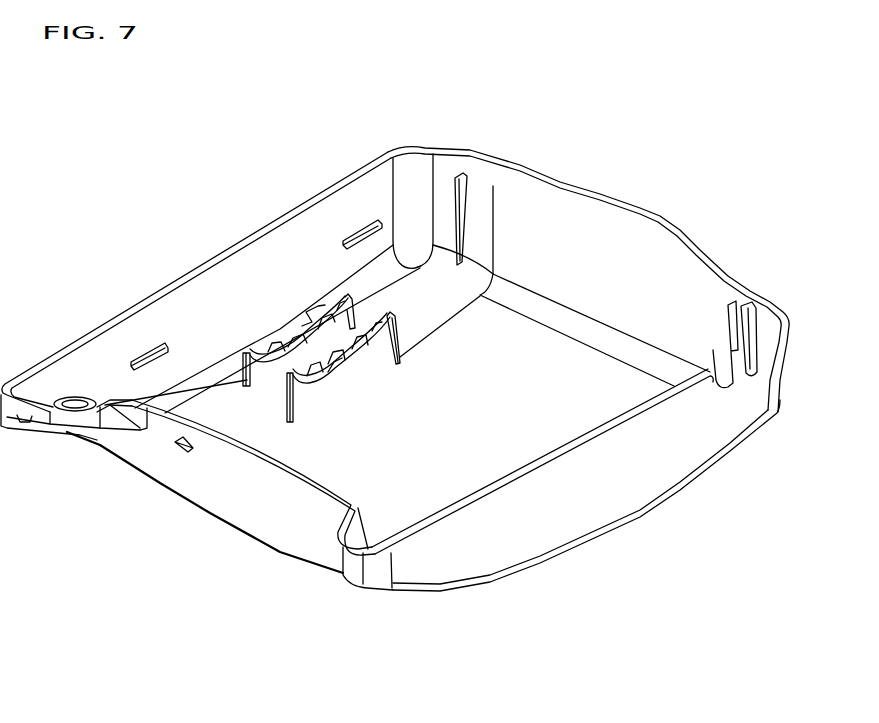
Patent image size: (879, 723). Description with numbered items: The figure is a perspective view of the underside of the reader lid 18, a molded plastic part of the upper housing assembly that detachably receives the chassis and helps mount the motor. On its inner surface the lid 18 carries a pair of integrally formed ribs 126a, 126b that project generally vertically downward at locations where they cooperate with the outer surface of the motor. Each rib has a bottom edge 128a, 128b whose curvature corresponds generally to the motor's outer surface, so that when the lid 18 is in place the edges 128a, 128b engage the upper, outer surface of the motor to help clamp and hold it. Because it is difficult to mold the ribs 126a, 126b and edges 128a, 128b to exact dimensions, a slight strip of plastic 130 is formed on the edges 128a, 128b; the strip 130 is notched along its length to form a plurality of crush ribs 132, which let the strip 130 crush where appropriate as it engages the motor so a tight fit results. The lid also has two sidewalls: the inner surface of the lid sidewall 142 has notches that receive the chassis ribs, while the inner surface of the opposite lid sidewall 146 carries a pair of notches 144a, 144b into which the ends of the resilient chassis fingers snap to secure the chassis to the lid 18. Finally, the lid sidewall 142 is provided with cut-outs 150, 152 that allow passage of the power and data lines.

The lid 18 is at (490, 560).
The rib 126a is at (358, 367).
The rib 126b is at (345, 318).
The bottom edge 128a is at (328, 377).
The bottom edge 128b is at (273, 363).
The strip of plastic 130 is at (357, 353).
The crush ribs 132 is at (312, 312).
The lid sidewall 142 is at (587, 478).
The notch 144a is at (150, 347).
The notch 144b is at (350, 237).
The lid sidewall 146 is at (238, 277).
The cut-out 150 is at (718, 366).
The cut-out 152 is at (750, 347).